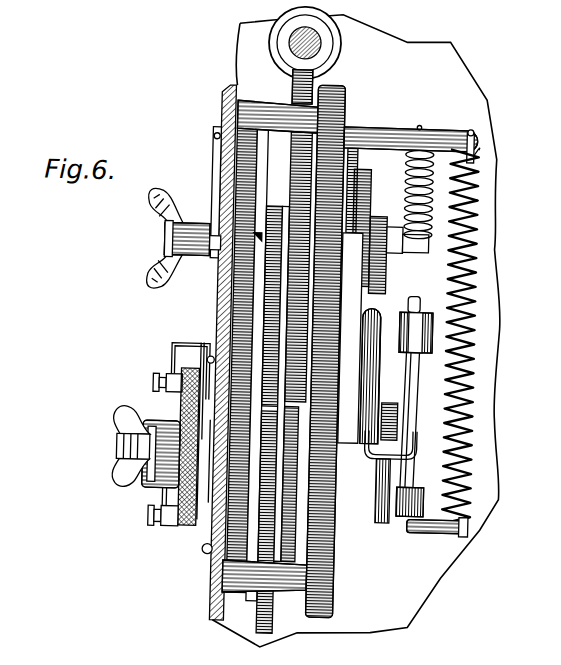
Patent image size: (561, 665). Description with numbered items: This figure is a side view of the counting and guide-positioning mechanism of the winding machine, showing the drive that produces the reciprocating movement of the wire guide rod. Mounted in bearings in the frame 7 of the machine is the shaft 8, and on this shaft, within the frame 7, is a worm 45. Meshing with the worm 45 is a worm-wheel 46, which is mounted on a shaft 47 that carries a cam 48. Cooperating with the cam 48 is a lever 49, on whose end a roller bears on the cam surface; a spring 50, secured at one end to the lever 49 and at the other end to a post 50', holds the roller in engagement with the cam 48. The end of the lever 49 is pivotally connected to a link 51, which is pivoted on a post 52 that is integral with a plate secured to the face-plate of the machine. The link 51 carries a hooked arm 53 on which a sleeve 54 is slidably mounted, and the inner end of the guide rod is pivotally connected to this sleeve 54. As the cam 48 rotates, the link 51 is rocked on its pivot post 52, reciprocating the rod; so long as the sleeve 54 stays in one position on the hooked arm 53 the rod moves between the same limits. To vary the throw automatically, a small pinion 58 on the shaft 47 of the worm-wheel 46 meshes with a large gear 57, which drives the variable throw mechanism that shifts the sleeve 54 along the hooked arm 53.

The frame 7 is at (218, 97).
The shaft 8 is at (297, 41).
The worm 45 is at (330, 59).
The worm-wheel 46 is at (290, 146).
The shaft 47 is at (255, 234).
The cam 48 is at (359, 199).
The lever 49 is at (391, 249).
The spring 50 is at (438, 337).
The post 50' is at (411, 130).
The link 51 is at (378, 289).
The post 52 is at (353, 337).
The hooked arm 53 is at (418, 380).
The sleeve 54 is at (422, 307).
The large gear 57 is at (274, 526).
The small pinion 58 is at (259, 242).